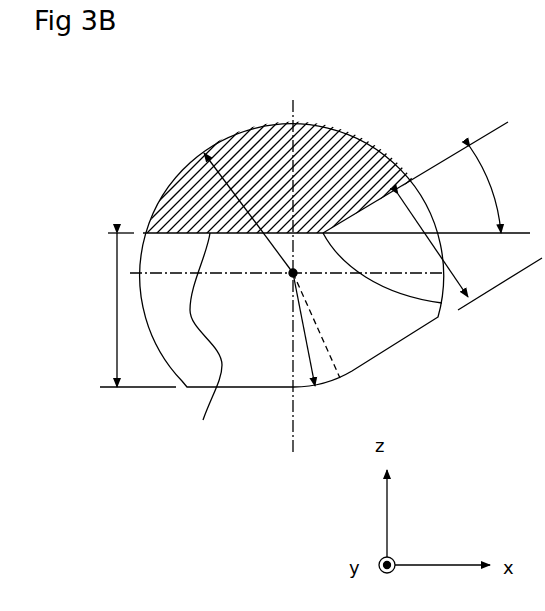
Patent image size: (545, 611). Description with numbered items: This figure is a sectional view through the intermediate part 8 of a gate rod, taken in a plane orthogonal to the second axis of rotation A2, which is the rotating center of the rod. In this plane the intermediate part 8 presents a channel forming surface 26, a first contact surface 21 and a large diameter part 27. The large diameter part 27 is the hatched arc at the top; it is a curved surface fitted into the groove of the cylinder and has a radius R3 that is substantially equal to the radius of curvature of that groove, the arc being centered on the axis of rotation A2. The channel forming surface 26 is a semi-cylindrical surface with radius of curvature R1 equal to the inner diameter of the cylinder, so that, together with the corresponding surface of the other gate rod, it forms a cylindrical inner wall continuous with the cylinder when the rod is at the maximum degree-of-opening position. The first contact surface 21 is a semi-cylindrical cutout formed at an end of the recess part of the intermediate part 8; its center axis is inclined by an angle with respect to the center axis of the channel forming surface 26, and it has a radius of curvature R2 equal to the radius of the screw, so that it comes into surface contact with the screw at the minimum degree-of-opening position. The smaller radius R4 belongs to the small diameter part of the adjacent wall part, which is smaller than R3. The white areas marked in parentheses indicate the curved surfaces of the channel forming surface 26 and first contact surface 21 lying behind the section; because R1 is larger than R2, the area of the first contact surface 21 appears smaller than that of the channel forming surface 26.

The intermediate part 8 is at (322, 123).
The large diameter part 27 is at (235, 129).
The first contact surface 21 is at (410, 183).
The channel forming surface 26 is at (216, 345).
The second axis of rotation A2 is at (289, 276).
The radius of curvature of the channel forming surface R1 is at (124, 310).
The radius of curvature of the first contact surface R2 is at (470, 252).
The radius of the large diameter part R3 is at (230, 190).
The radius of the small diameter part R4 is at (316, 329).